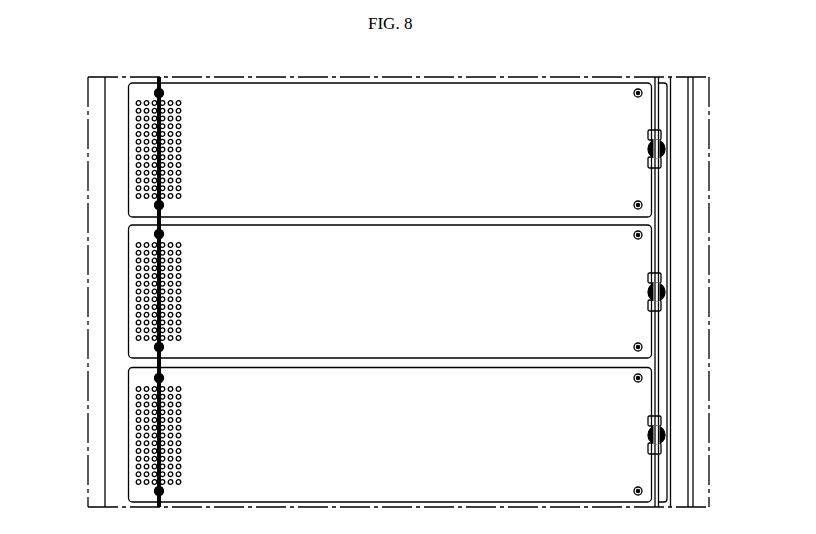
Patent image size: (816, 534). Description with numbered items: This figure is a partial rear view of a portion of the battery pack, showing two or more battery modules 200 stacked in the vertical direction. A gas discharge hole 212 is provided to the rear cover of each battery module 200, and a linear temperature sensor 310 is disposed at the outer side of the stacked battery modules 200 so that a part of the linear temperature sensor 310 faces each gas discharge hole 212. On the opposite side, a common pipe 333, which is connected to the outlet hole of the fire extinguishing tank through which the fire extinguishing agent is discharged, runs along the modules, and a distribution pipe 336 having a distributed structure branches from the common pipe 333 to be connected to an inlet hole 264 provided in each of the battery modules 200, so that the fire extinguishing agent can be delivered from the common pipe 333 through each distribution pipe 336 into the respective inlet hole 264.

The battery module 200 is at (600, 123).
The gas discharge hole 212 is at (148, 141).
The linear temperature sensor 310 is at (130, 220).
The common pipe 333 is at (655, 187).
The distribution pipe 336 is at (660, 283).
The inlet hole 264 is at (663, 292).